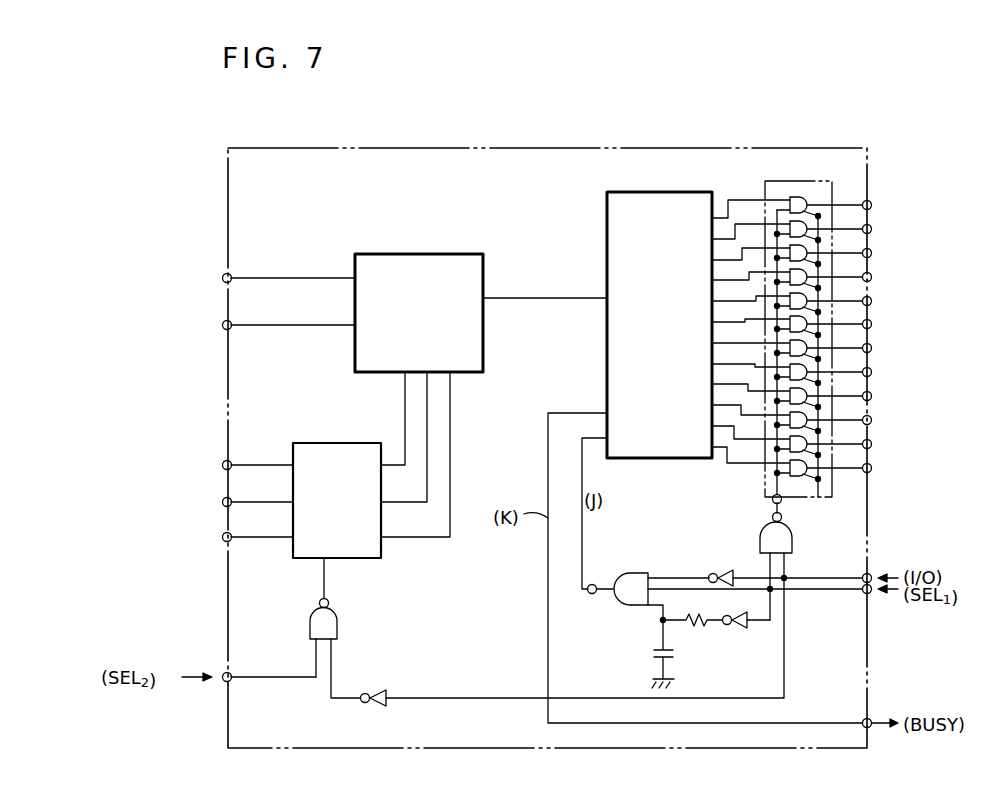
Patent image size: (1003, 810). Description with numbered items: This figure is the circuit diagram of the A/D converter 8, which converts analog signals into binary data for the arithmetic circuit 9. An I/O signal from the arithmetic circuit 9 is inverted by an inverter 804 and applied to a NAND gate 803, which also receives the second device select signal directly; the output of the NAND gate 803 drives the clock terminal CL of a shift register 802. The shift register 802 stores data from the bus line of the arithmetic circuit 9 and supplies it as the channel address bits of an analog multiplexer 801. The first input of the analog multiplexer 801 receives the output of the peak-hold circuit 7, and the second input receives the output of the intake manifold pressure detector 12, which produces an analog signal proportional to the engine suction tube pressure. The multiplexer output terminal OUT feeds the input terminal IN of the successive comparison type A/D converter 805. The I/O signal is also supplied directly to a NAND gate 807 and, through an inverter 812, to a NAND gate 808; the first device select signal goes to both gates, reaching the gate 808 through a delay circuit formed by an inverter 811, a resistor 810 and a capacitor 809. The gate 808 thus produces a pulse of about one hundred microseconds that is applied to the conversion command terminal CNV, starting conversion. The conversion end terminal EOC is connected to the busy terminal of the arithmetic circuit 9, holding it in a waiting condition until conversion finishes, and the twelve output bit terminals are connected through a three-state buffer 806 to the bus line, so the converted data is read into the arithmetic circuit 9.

The peak-hold circuit 7 is at (212, 278).
The A/D converter 8 is at (452, 145).
The arithmetic circuit 9 is at (215, 543).
The intake manifold pressure detector 12 is at (212, 325).
The analog multiplexer 801 is at (426, 254).
The shift register 802 is at (341, 443).
The NAND gate 803 is at (337, 617).
The inverter 804 is at (380, 690).
The A/D converter 805 is at (700, 192).
The three-state buffer 806 is at (800, 181).
The NAND gate 807 is at (792, 538).
The NAND gate 808 is at (614, 596).
The capacitor 809 is at (654, 653).
The resistor 810 is at (700, 625).
The inverter 811 is at (742, 629).
The inverter 812 is at (726, 571).